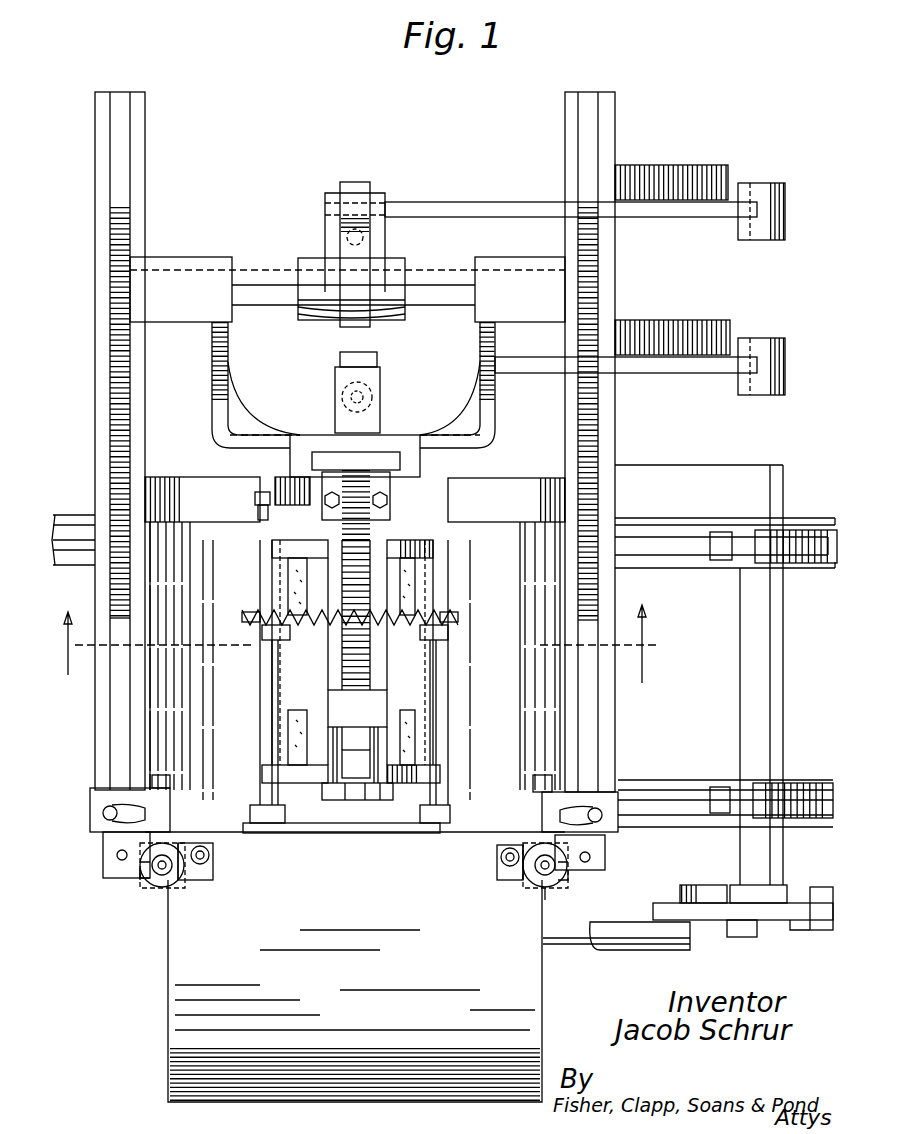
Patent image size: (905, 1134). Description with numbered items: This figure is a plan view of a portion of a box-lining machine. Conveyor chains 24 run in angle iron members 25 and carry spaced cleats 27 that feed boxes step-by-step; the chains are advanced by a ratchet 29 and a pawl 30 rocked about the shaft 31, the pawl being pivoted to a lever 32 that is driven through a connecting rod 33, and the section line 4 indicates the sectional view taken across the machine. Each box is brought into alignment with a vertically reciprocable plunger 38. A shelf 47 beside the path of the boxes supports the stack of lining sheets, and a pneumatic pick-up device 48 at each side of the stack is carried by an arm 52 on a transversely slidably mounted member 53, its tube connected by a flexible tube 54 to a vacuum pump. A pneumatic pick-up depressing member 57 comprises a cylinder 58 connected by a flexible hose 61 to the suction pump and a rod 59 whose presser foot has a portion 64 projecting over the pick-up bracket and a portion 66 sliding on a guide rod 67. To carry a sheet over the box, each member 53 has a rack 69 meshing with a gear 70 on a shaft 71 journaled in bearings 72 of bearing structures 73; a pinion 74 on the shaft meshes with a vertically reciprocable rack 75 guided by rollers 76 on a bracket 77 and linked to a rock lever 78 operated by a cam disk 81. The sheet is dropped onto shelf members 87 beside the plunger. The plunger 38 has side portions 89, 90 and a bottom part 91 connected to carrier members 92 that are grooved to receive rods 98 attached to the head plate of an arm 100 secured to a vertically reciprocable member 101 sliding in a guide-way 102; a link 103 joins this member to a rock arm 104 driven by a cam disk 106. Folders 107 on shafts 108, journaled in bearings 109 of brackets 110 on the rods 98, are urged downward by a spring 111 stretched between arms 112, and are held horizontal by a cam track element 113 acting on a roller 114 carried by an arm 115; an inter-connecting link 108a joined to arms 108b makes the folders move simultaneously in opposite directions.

The section line arrows 4 is at (357, 657).
The conveyor chain 24 is at (662, 557).
The angle iron member 25 is at (86, 515).
The cleat 27 is at (720, 562).
The ratchet 29 is at (705, 895).
The pawl 30 is at (795, 900).
The shaft 31 is at (775, 697).
The lever 32 is at (792, 925).
The connecting rod 33 is at (585, 948).
The plunger 38 is at (312, 678).
The shelf 47 is at (168, 998).
The pneumatic pick-up device 48 is at (212, 865).
The arm 52 is at (118, 858).
The transversely slidably mounted member 53 is at (120, 752).
The flexible tube 54 is at (210, 856).
The pneumatic pick-up depressing member 57 is at (134, 896).
The cylinder 58 is at (162, 888).
The rod 59 is at (158, 870).
The flexible hose 61 is at (108, 820).
The portion 64 is at (192, 882).
The portion 66 is at (140, 872).
The guide rod 67 is at (134, 864).
The rack 69 is at (95, 418).
The gear 70 is at (600, 255).
The shaft 71 is at (445, 306).
The bearing 72 is at (215, 262).
The bearing 73 is at (213, 438).
The pinion 74 is at (350, 316).
The rack 75 is at (347, 242).
The roller 76 is at (122, 242).
The bracket 77 is at (340, 197).
The rock lever 78 is at (463, 208).
The cam disk 81 is at (690, 165).
The shelf member 87 is at (160, 726).
The side portion 89 is at (332, 802).
The side portion 90 is at (385, 802).
The bottom part 91 is at (365, 802).
The carrier member 92 is at (345, 800).
The rod 98 is at (355, 750).
The arm 100 is at (388, 516).
The vertically reciprocable member 101 is at (392, 468).
The guide-way 102 is at (405, 437).
The link 103 is at (342, 392).
The rock arm 104 is at (545, 373).
The disk 106 is at (676, 320).
The folder 107 is at (295, 580).
The shaft 108 is at (272, 668).
The inter-connecting link 108a is at (303, 834).
The arm 108b is at (258, 823).
The bearing 109 is at (435, 548).
The bracket 110 is at (412, 542).
The spring 111 is at (310, 624).
The arm 112 is at (470, 608).
The cam track element 113 is at (290, 488).
The roller 114 is at (255, 496).
The arm 115 is at (258, 519).